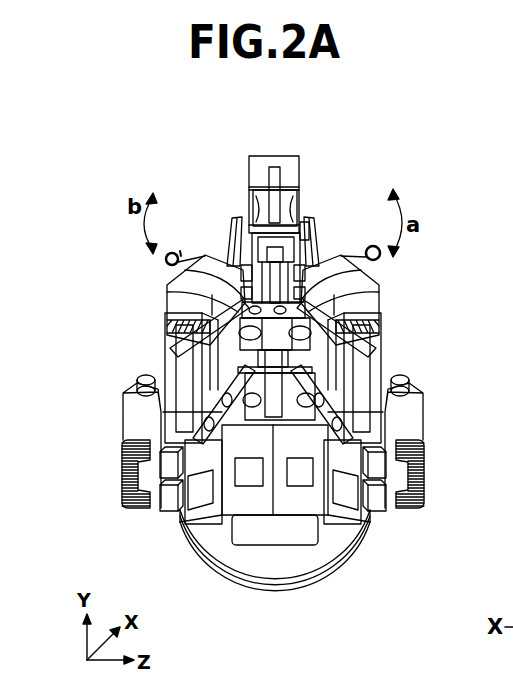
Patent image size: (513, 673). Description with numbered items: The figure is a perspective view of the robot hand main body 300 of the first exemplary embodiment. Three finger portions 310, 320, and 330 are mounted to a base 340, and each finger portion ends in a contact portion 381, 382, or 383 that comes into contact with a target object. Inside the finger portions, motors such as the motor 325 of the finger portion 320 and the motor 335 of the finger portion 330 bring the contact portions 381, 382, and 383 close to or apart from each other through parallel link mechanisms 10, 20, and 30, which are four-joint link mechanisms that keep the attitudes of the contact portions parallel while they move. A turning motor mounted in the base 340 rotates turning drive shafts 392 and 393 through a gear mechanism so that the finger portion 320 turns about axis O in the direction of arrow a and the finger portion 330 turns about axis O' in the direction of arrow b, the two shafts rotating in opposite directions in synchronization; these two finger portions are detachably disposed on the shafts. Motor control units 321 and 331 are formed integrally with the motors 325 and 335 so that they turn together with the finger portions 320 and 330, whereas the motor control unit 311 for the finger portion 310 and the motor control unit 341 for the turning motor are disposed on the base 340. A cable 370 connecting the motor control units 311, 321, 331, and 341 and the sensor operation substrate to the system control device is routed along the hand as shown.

The robot hand main body 300 is at (178, 123).
The finger portion 310 is at (308, 153).
The contact portion 381 is at (275, 180).
The parallel link mechanism 10 is at (312, 226).
The contact portion 382 is at (320, 240).
The contact portion 383 is at (230, 228).
The finger portion 330 is at (64, 499).
The turning drive shaft 393 is at (172, 300).
The turning drive shaft 392 is at (352, 287).
The parallel link mechanism 30 is at (157, 353).
The parallel link mechanism 20 is at (391, 345).
The finger portion 320 is at (472, 514).
The motor control unit 311 is at (288, 510).
The motor control unit 331 is at (183, 520).
The motor control unit 321 is at (367, 520).
The motor 335 is at (133, 423).
The motor 325 is at (417, 425).
The cable 370 is at (133, 507).
The motor control unit 341 is at (249, 510).
The base 340 is at (262, 563).